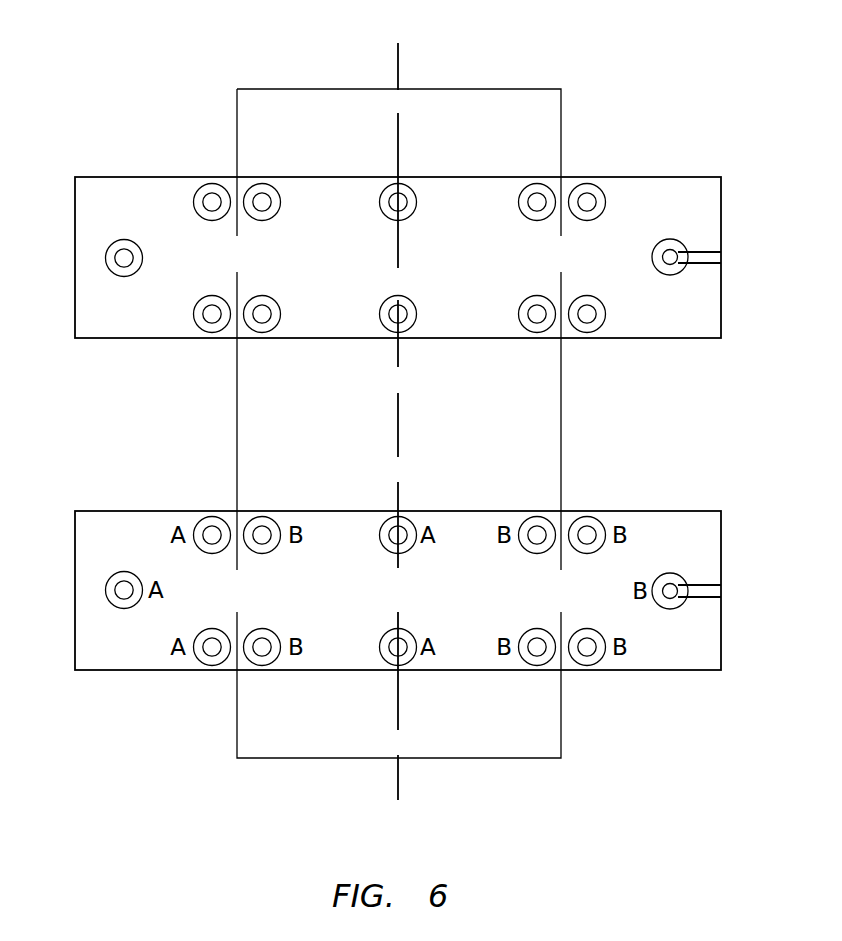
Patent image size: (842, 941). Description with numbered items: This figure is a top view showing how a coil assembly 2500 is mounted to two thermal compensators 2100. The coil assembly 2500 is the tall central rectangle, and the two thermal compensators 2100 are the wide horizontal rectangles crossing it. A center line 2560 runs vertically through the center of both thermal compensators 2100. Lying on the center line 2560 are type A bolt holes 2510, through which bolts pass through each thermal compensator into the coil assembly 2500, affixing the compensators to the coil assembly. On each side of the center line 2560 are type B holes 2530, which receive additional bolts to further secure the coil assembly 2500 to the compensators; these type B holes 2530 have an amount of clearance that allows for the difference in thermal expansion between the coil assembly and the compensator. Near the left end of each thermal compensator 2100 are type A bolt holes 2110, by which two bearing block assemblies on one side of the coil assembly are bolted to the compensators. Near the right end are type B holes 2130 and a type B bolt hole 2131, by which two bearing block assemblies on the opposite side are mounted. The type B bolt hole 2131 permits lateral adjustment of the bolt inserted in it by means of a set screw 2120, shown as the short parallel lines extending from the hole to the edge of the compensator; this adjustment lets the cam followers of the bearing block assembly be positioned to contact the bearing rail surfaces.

The thermal compensator 2100 is at (637, 351).
The type A bolt hole 2110 is at (204, 219).
The set screw 2120 is at (706, 259).
The type B hole 2130 is at (601, 299).
The type B bolt hole 2131 is at (694, 237).
The coil assembly 2500 is at (563, 126).
The type A bolt hole 2510 is at (386, 296).
The type B hole 2530 is at (262, 183).
The center line 2560 is at (402, 65).